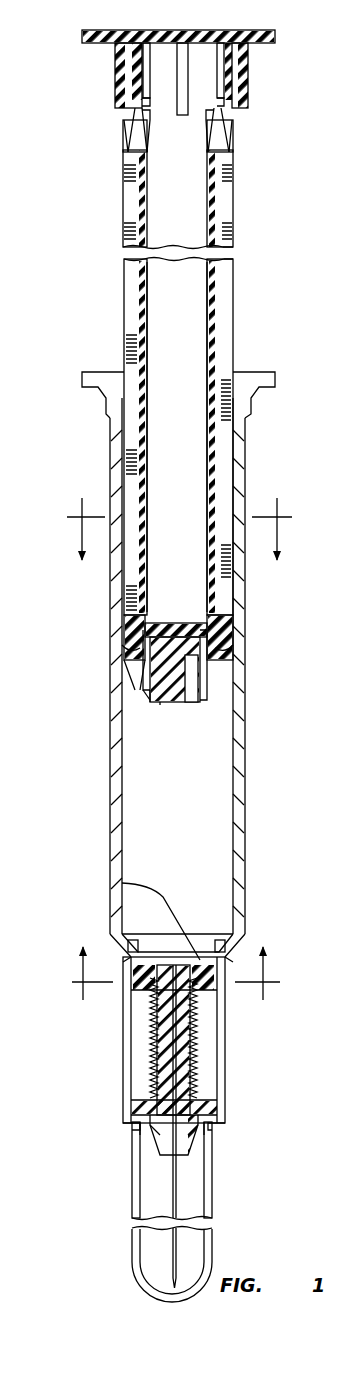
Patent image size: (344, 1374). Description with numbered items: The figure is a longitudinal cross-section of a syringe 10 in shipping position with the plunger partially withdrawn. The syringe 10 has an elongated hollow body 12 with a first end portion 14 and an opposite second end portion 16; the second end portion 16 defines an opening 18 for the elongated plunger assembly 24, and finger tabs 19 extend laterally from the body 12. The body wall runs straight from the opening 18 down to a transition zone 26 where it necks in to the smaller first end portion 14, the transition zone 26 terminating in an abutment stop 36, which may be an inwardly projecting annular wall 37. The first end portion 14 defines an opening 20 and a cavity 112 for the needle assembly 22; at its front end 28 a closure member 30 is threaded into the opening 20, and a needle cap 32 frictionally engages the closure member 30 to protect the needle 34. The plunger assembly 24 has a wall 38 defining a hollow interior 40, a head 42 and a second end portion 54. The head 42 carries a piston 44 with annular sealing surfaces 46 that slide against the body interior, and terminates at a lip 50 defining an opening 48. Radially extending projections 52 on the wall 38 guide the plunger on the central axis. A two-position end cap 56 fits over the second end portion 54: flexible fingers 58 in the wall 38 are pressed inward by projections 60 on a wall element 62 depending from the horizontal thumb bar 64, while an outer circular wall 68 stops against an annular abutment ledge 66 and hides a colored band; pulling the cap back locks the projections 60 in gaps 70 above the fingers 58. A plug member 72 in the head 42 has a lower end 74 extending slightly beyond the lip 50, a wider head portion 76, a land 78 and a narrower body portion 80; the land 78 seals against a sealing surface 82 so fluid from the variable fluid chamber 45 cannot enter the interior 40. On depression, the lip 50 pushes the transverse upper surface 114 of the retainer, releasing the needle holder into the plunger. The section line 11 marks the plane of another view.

The syringe 10 is at (115, 20).
The section line 11- 11 is at (176, 977).
The elongated hollow body 12 is at (250, 757).
The first end portion 14 is at (120, 1047).
The second end portion 16 is at (250, 454).
The opening 18 is at (128, 348).
The finger tabs 19 is at (82, 385).
The opening 20 is at (150, 1135).
The needle assembly 22 is at (203, 1037).
The elongated plunger assembly 24 is at (124, 275).
The transition zone 26 is at (110, 930).
The front end 28 is at (132, 1128).
The closure member 30 is at (212, 1158).
The needle cap 32 is at (132, 1244).
The needle 34 is at (178, 1188).
The abutment stop 36 is at (126, 966).
The inwardly projecting annular wall 37 is at (129, 942).
The wall 38 is at (223, 312).
The hollow interior 40 is at (188, 472).
The first end portion or head 42 is at (140, 684).
The piston 44 is at (122, 643).
The variable fluid chamber 45 is at (184, 886).
The annular sealing surfaces 46 is at (233, 612).
The opening 48 is at (162, 702).
The lip 50 is at (126, 702).
The radially extending projections 52 is at (123, 217).
The second end portion 54 is at (238, 152).
The two-position end cap 56 is at (103, 86).
The flexible fingers 58 is at (188, 80).
The radially inwardly extending projections 60 is at (130, 120).
The wall element 62 is at (136, 160).
The horizontal thumb bar 64 is at (236, 30).
The annular abutment ledge 66 is at (236, 378).
The circular wall 68 is at (115, 65).
The gaps 70 is at (140, 113).
The plug member 72 is at (186, 676).
The lower end 74 is at (173, 702).
The head portion 76 is at (180, 622).
The land 78 is at (218, 637).
The body portion 80 is at (206, 686).
The sealing surface 82 is at (125, 593).
The cavity 112 is at (204, 1068).
The transverse upper surface 114 is at (116, 883).